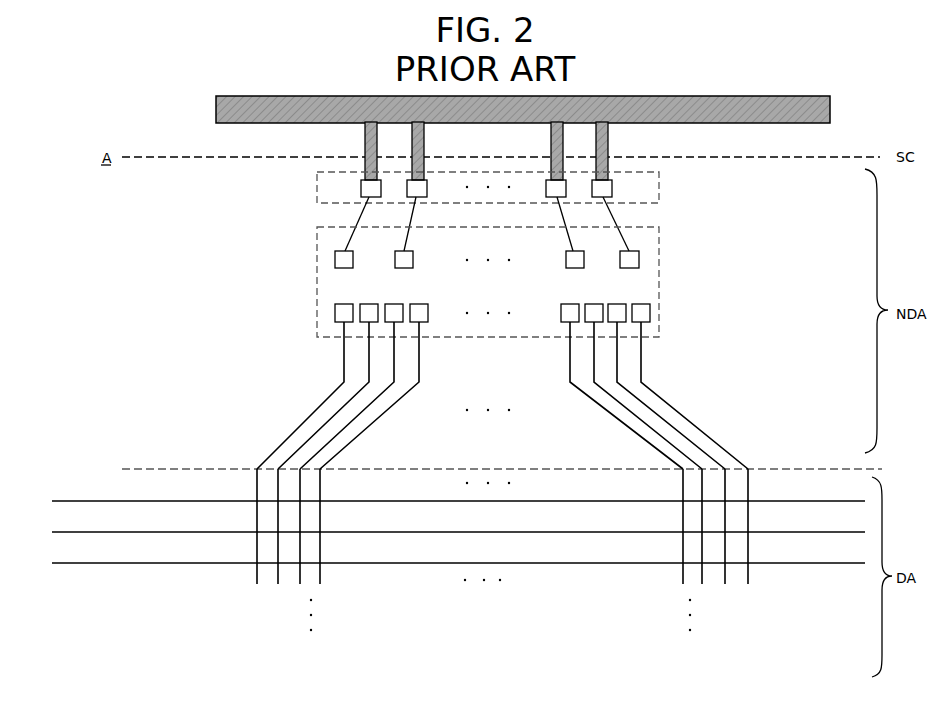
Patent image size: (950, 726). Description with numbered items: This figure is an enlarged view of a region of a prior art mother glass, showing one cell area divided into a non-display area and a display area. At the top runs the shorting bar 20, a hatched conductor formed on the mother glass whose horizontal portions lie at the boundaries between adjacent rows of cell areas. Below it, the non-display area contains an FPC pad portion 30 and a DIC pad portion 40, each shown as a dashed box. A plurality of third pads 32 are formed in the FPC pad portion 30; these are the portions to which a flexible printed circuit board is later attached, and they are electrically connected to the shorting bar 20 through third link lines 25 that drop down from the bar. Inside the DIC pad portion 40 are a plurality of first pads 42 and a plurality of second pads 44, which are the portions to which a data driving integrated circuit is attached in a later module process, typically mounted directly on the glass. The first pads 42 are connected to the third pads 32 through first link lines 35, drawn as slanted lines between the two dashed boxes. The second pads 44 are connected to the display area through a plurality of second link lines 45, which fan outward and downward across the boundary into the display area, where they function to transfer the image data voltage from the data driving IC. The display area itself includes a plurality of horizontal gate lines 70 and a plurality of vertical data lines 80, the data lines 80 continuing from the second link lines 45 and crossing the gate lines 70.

The shorting bar 20 is at (832, 110).
The third link lines 25 is at (370, 138).
The FPC pad portion 30 is at (317, 191).
The third pads 32 is at (612, 187).
The first link lines 35 is at (346, 223).
The DIC pad portion 40 is at (317, 290).
The first pads 42 is at (639, 254).
The second pads 44 is at (650, 310).
The second link lines 45 is at (650, 355).
The gate lines 70 is at (150, 500).
The data lines 80 is at (320, 572).